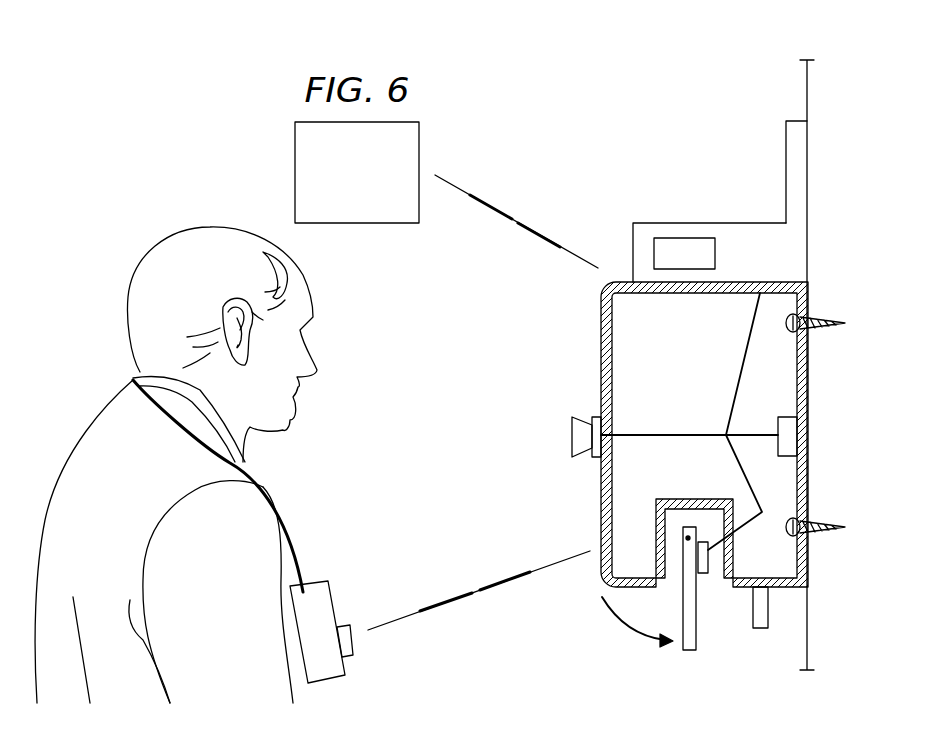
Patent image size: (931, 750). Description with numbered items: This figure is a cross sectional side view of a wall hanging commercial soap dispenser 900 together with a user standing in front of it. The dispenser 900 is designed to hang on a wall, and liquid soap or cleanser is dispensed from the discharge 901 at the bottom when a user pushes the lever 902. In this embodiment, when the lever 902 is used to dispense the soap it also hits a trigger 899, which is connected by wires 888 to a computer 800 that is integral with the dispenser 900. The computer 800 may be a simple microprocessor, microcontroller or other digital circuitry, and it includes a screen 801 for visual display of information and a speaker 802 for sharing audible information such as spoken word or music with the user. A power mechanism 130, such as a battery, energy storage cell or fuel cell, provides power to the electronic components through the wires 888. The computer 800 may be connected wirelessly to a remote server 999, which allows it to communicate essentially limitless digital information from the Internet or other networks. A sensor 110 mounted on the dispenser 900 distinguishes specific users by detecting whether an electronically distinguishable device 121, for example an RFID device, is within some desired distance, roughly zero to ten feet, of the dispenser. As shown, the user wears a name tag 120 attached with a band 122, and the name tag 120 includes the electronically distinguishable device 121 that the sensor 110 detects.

The remote server 999 is at (375, 186).
The screen 801 is at (786, 168).
The computer 800 is at (695, 222).
The speaker 802 is at (715, 252).
The dispenser 900 is at (597, 335).
The wires 888 is at (738, 373).
The power mechanism 130 is at (785, 417).
The sensor 110 is at (572, 423).
The lever 902 is at (688, 652).
The trigger 899 is at (703, 577).
The discharge 901 is at (768, 612).
The band 122 is at (300, 556).
The name tag 120 is at (335, 603).
The electronically distinguishable device 121 is at (353, 645).